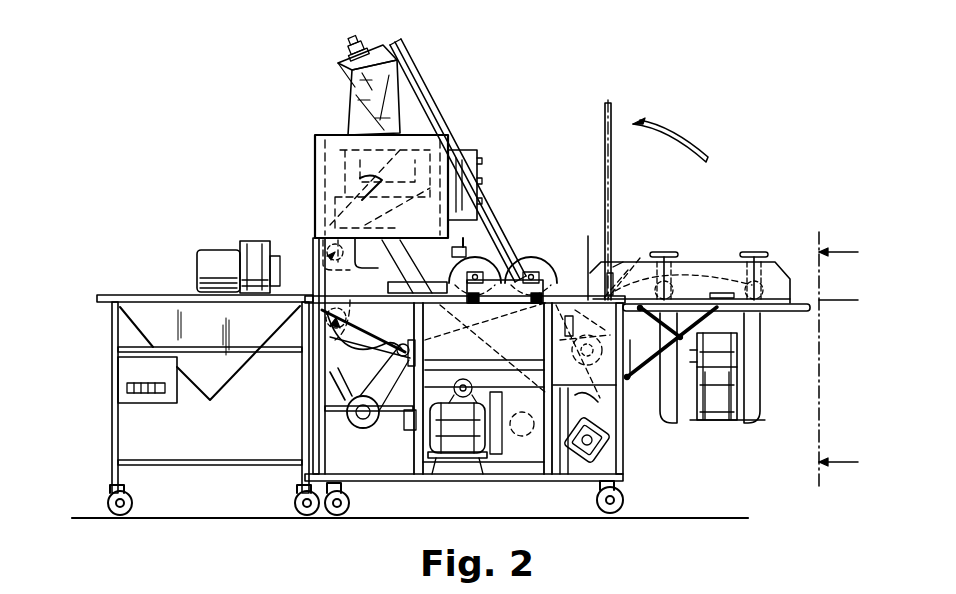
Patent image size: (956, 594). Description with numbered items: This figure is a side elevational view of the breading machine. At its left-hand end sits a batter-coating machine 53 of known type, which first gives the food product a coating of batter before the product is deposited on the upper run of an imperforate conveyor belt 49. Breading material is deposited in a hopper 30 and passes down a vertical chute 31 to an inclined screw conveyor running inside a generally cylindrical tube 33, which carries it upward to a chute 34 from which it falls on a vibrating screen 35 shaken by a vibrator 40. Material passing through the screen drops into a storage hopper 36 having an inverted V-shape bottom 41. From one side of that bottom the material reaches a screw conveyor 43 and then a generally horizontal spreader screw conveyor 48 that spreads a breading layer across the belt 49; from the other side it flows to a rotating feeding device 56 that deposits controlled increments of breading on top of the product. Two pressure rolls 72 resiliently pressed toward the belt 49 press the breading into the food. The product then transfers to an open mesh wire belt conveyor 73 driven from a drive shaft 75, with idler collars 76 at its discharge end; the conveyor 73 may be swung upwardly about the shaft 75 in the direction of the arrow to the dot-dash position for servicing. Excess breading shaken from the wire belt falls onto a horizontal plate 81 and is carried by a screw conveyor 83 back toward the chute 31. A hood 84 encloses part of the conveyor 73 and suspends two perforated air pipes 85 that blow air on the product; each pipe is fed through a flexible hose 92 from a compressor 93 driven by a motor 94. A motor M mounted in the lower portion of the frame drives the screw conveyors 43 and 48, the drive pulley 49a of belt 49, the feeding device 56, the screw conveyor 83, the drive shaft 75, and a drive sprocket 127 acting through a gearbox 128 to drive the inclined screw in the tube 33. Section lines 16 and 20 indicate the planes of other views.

The section line 16- 16 is at (715, 346).
The section line 20- 20 is at (836, 356).
The hopper 30 is at (541, 262).
The vertical chute 31 is at (550, 339).
The cylindrical tube 33 is at (410, 112).
The chute 34 is at (386, 70).
The vibrating screen 35 is at (347, 180).
The hopper 36 is at (313, 145).
The vibrator 40 is at (400, 140).
The inverted V-shape bottom 41 is at (362, 218).
The screw conveyor 43 is at (333, 257).
The horizontal screw conveyor 48 is at (298, 311).
The conveyor belt 49 is at (486, 342).
The drive pulley 49a is at (312, 356).
The batter-coating machine 53 is at (157, 263).
The feeding device 56 is at (363, 203).
The pressure rolls 72 is at (500, 262).
The open mesh wire belt conveyor 73 is at (617, 122).
The drive shaft 75 is at (621, 290).
The idler collars 76 is at (790, 300).
The horizontal plate 81 is at (790, 311).
The screw conveyor 83 is at (660, 314).
The hood 84 is at (690, 262).
The air pipes 85 is at (689, 281).
The flexible hose 92 is at (670, 425).
The compressor 93 is at (715, 425).
The motor 94 is at (697, 357).
The drive sprocket 127 is at (580, 478).
The gearbox 128 is at (625, 472).
The motor M is at (463, 458).